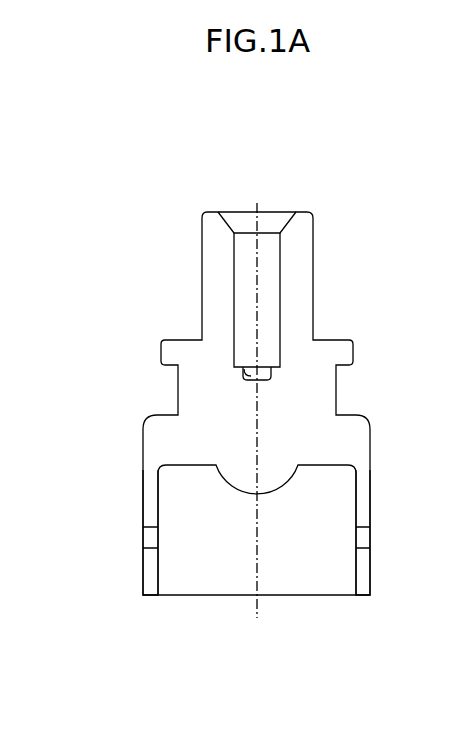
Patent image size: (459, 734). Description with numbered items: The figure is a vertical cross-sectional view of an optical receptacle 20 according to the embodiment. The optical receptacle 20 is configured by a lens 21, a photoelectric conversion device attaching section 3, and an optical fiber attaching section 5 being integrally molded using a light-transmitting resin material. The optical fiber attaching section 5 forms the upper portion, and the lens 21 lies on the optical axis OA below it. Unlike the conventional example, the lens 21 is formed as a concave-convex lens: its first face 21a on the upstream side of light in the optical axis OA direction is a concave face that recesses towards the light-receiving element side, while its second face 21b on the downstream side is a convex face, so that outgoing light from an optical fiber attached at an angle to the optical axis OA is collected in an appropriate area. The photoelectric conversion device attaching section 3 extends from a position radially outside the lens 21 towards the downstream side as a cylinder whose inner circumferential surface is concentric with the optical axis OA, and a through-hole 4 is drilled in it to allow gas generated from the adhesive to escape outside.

The optical receptacle 20 is at (164, 250).
The optical fiber attaching section 5 is at (200, 298).
The lens 21 is at (191, 481).
The first face 21a is at (244, 371).
The second face 21b is at (223, 482).
The photoelectric conversion device attaching section 3 is at (142, 510).
The through-hole 4 is at (151, 548).
The optical axis OA is at (258, 533).